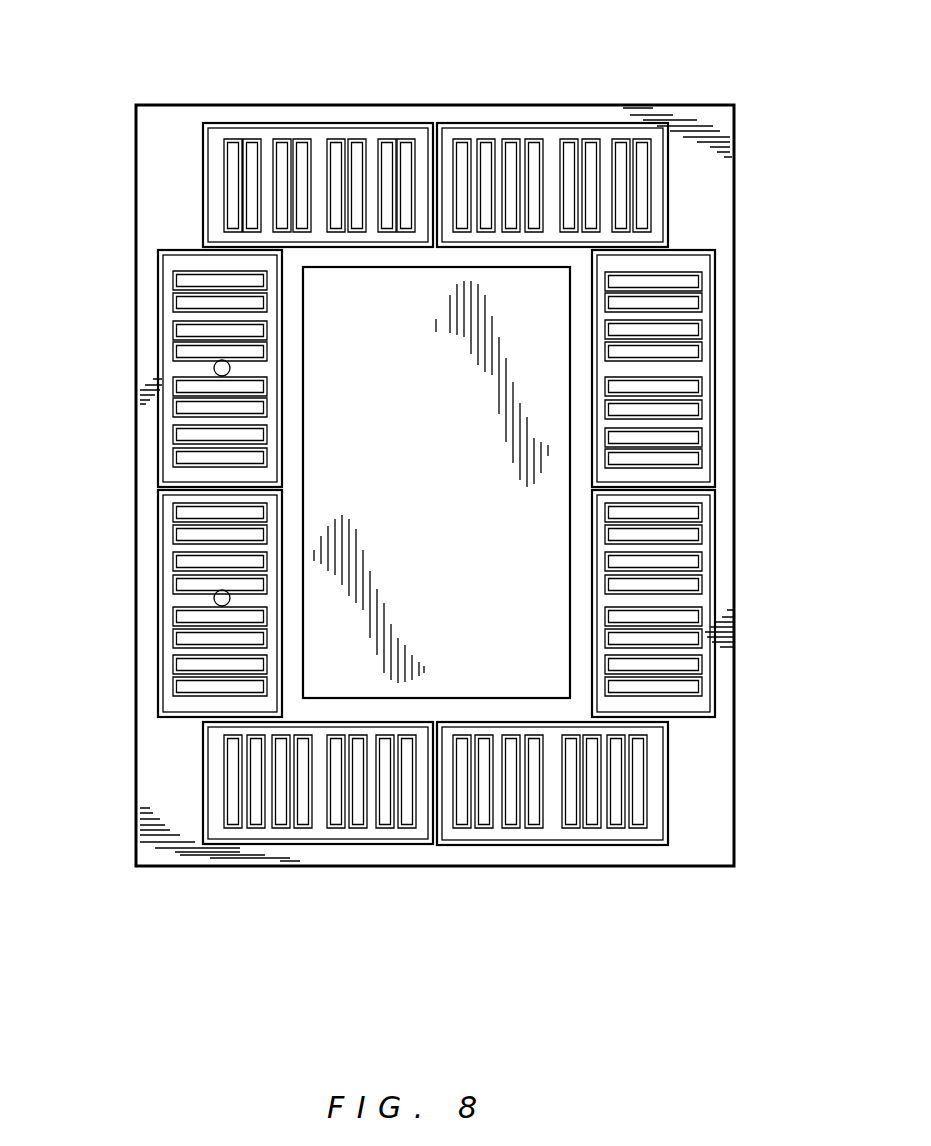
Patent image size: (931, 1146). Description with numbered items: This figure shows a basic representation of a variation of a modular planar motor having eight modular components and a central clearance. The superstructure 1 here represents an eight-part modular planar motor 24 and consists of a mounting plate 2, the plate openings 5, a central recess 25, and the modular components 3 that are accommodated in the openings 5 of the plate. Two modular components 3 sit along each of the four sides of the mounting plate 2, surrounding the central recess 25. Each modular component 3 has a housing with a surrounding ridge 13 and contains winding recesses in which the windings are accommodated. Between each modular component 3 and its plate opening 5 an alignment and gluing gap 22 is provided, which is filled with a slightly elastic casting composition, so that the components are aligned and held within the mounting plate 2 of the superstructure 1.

The superstructure 1 is at (702, 88).
The mounting plate 2 is at (598, 117).
The modular component 3 is at (245, 153).
The plate openings 5 is at (338, 140).
The surrounding ridge 13 is at (478, 150).
The alignment and gluing gap 22 is at (434, 483).
The 8-part modular planar motor 24 is at (715, 185).
The central recess 25 is at (573, 325).